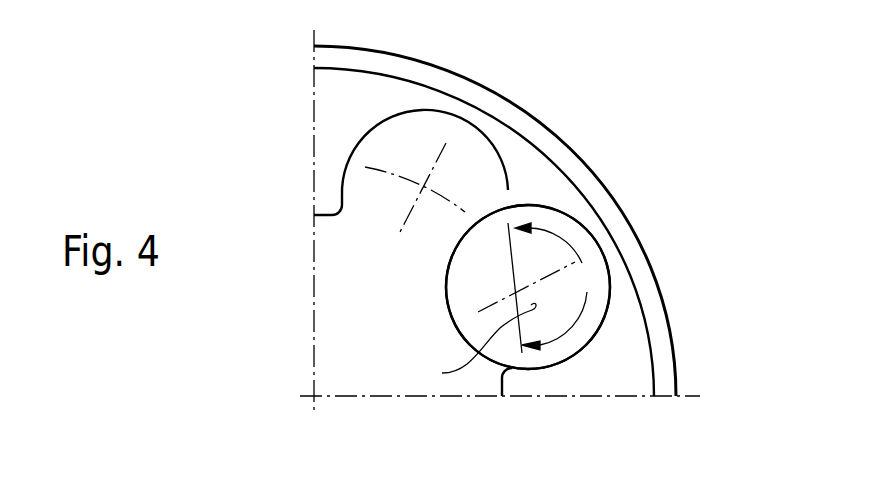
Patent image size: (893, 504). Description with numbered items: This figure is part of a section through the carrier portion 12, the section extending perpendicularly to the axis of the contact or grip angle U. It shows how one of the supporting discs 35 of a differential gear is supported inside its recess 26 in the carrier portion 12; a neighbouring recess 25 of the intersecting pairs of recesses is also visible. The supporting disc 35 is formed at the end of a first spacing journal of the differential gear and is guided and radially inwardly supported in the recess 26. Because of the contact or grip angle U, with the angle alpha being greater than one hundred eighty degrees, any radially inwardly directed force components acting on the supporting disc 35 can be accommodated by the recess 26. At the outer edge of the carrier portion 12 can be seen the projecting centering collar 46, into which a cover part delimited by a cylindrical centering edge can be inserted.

The carrier portion 12 is at (518, 208).
The recess 25 is at (480, 138).
The recess 26 is at (554, 212).
The supporting disc 35 is at (600, 243).
The centering collar 46 is at (651, 281).